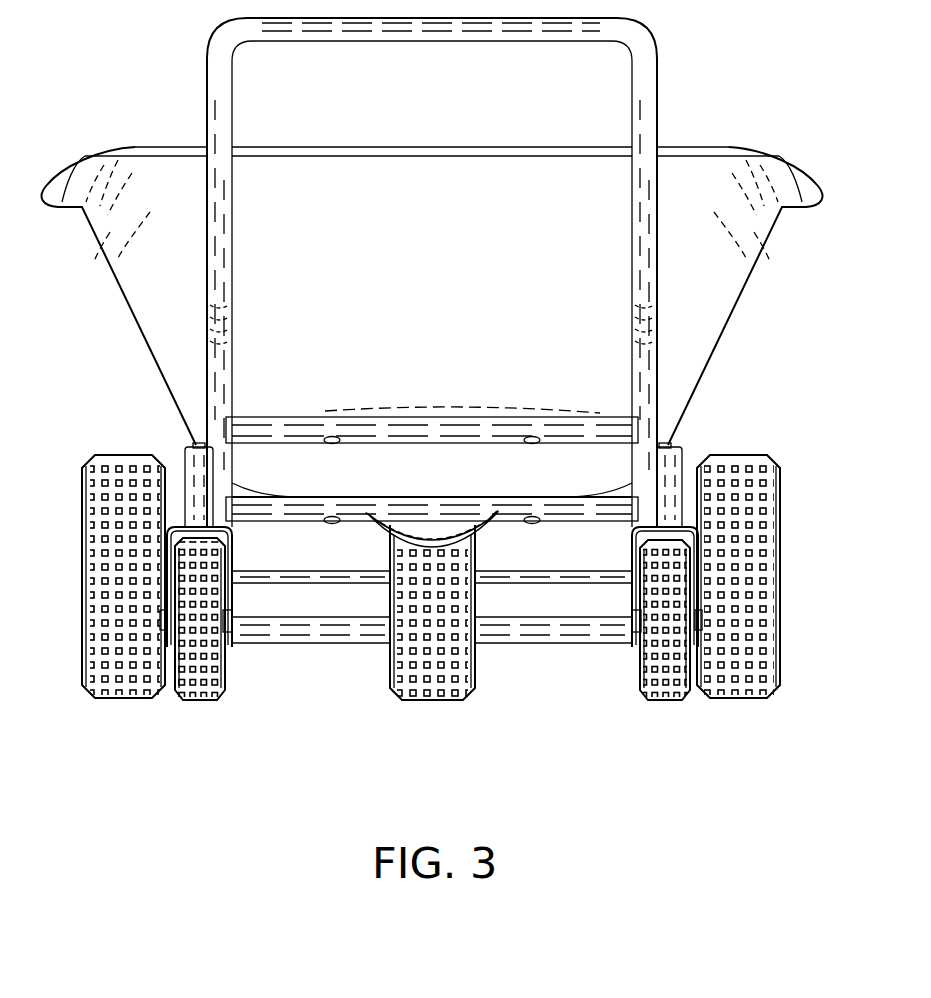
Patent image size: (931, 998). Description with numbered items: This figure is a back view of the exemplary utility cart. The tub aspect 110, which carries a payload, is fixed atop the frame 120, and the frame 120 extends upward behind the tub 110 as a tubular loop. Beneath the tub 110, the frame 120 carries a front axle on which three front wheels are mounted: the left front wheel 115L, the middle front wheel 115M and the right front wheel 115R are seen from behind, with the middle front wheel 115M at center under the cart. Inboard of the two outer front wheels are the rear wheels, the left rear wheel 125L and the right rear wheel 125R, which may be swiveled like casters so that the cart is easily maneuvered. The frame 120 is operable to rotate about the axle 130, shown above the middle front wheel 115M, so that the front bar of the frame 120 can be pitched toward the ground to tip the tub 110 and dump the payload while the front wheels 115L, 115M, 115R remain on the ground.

The tub aspect 110 is at (477, 289).
The frame 120 is at (657, 392).
The left front wheel 115L is at (85, 690).
The middle front wheel 115M is at (393, 688).
The right front wheel 115R is at (777, 690).
The left rear wheel 125L is at (227, 660).
The right rear wheel 125R is at (636, 660).
The axle 130 is at (378, 583).